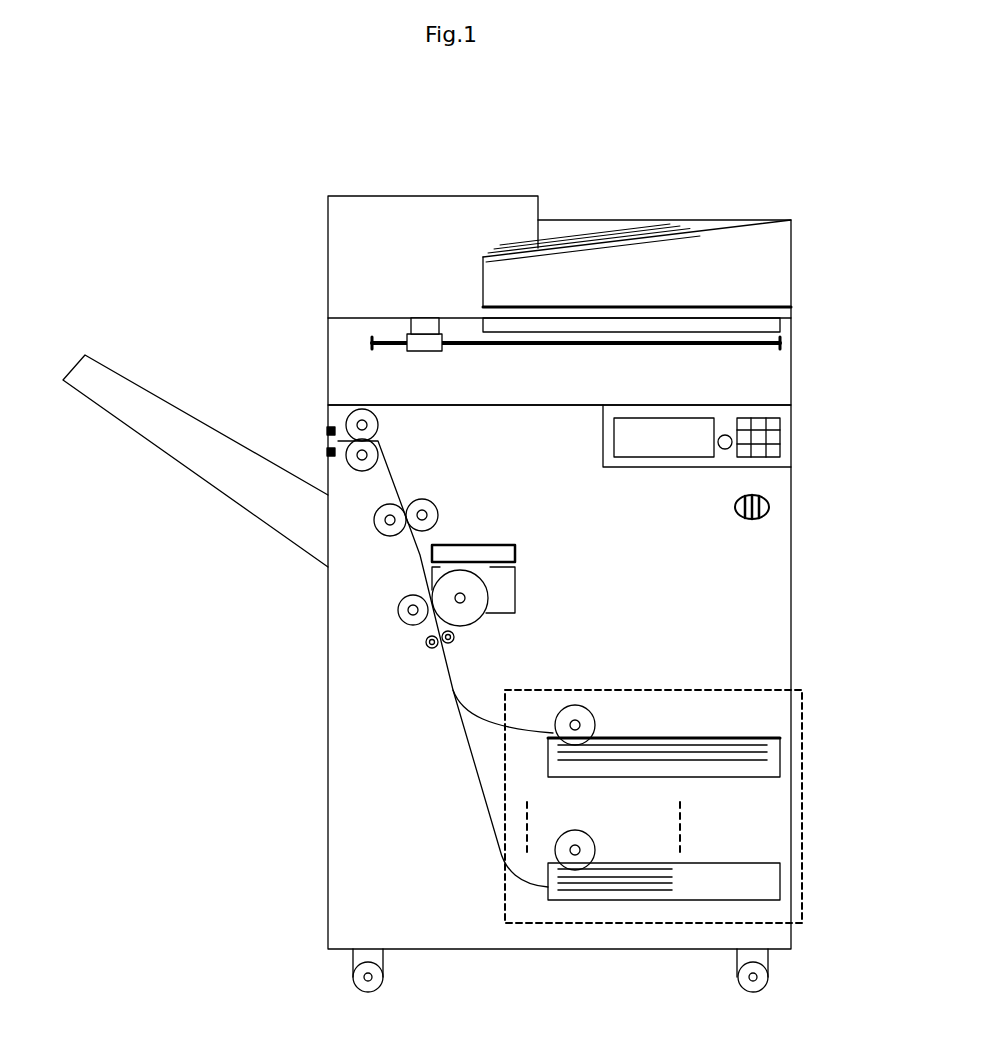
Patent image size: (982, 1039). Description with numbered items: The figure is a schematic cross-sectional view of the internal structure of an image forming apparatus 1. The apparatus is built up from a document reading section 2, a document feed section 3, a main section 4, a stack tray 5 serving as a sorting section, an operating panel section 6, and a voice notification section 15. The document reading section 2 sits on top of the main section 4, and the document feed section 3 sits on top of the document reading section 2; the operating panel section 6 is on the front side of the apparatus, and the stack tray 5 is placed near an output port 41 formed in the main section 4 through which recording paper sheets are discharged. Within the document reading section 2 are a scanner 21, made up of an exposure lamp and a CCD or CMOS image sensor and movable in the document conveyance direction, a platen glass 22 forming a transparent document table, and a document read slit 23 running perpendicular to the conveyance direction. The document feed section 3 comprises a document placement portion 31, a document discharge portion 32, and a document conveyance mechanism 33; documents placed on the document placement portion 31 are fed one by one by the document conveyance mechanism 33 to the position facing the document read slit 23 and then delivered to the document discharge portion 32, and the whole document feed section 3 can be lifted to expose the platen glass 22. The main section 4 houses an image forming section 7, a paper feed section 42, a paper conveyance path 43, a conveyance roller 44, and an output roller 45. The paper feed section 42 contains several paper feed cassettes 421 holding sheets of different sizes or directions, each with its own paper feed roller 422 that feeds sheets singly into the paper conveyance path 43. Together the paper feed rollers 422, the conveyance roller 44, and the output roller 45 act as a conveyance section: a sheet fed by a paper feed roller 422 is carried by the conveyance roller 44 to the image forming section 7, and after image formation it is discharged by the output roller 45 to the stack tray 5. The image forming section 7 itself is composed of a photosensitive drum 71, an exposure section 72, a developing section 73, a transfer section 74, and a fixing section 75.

The image forming apparatus 1 is at (266, 228).
The document reading section 2 is at (327, 355).
The document feed section 3 is at (327, 258).
The main section 4 is at (793, 652).
The stack tray 5 is at (224, 487).
The operating panel section 6 is at (792, 424).
The image forming section 7 is at (594, 555).
The voice notification section 15 is at (770, 505).
The scanner 21 is at (440, 353).
The platen glass 22 is at (780, 320).
The document read slit 23 is at (428, 318).
The document placement portion 31 is at (690, 235).
The document discharge portion 32 is at (661, 307).
The document conveyance mechanism 33 is at (435, 202).
The output port 41 is at (327, 440).
The paper feed section 42 is at (802, 745).
The paper conveyance path 43 is at (443, 657).
The conveyance roller 44 is at (426, 642).
The output roller 45 is at (379, 423).
The photosensitive drum 71 is at (470, 623).
The exposure section 72 is at (517, 551).
The developing section 73 is at (517, 585).
The transfer section 74 is at (398, 608).
The fixing section 75 is at (439, 513).
The paper feed cassette 421 is at (738, 720).
The paper feed roller 422 is at (596, 722).